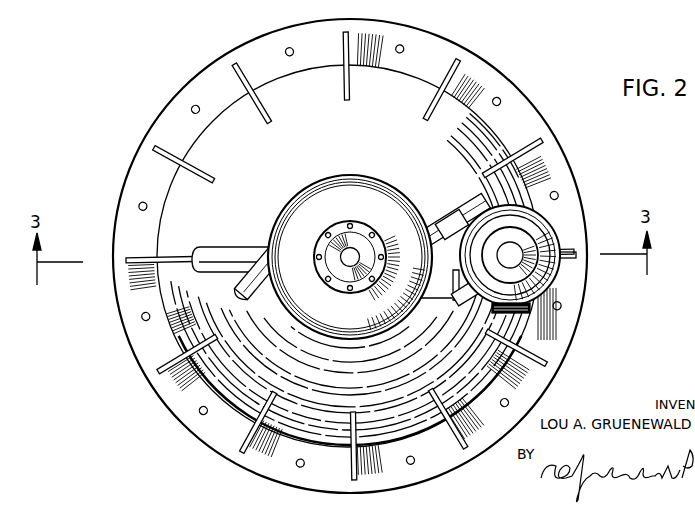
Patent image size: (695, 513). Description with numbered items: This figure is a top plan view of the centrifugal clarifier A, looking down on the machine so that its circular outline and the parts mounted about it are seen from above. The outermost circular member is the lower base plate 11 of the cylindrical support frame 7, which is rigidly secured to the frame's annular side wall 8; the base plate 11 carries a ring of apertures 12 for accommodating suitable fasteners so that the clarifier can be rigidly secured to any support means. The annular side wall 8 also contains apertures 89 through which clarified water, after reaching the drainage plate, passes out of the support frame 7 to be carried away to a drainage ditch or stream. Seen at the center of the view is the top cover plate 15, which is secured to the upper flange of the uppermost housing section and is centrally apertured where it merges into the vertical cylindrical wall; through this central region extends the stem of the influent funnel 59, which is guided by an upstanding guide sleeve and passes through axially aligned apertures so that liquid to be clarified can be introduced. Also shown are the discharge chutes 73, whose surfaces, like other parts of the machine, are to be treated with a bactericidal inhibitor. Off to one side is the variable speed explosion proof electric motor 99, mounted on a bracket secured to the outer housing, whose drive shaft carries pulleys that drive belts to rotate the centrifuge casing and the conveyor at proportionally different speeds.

The centrifugal clarifier A is at (140, 127).
The cylindrical support frame 7 is at (455, 112).
The annular side wall 8 is at (398, 92).
The lower base plate 11 is at (135, 297).
The apertures 12 is at (193, 103).
The top cover plate 15 is at (315, 302).
The influent funnel 59 is at (348, 224).
The discharge chutes 73 is at (237, 288).
The apertures 89 is at (212, 255).
The variable speed explosion proof electric motor 99 is at (552, 211).